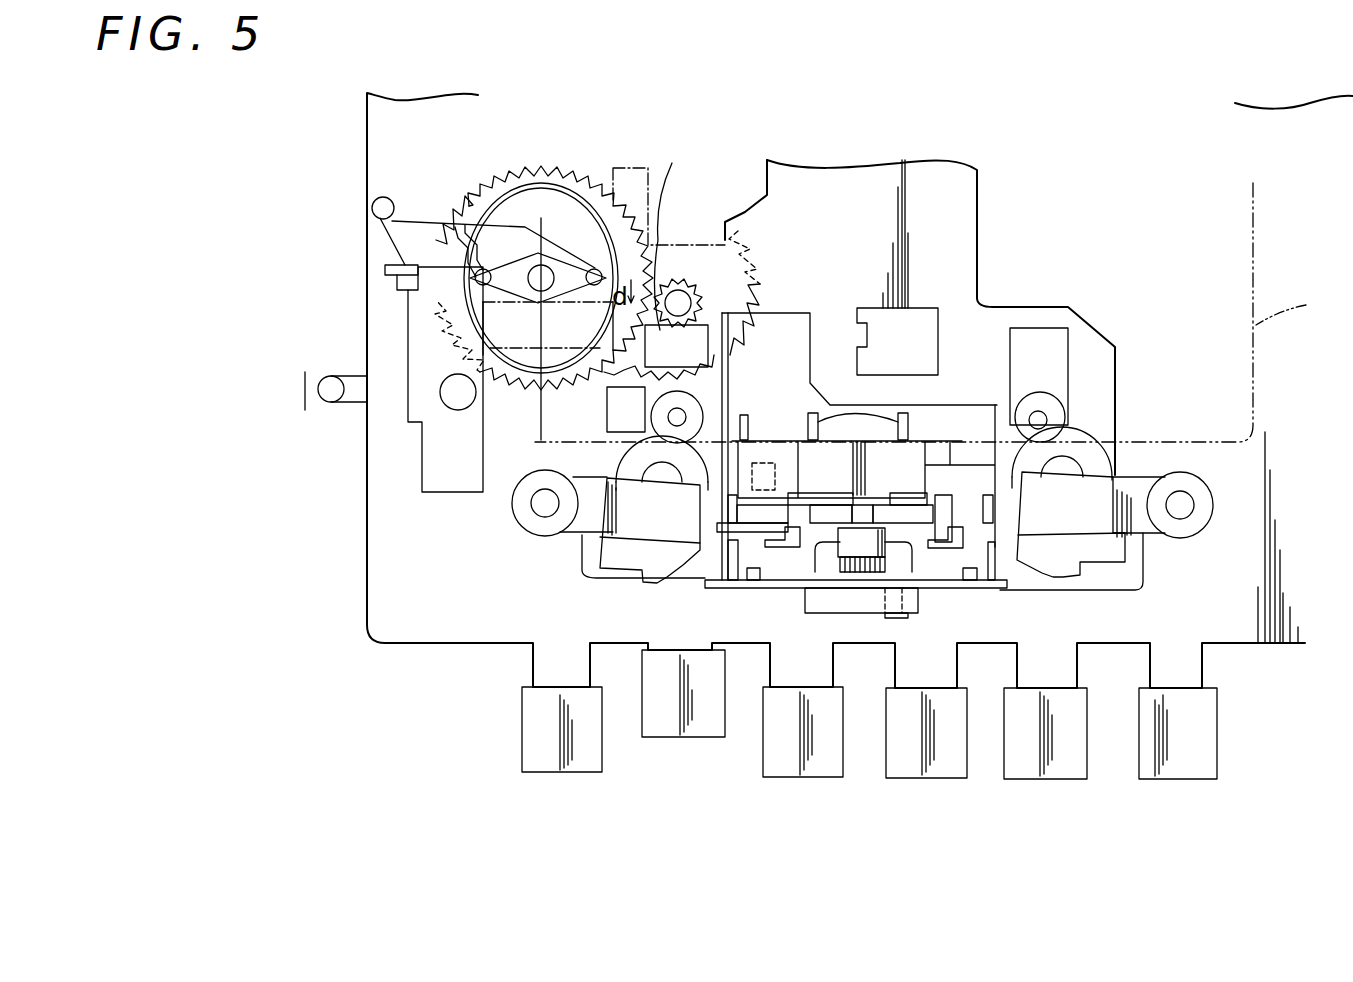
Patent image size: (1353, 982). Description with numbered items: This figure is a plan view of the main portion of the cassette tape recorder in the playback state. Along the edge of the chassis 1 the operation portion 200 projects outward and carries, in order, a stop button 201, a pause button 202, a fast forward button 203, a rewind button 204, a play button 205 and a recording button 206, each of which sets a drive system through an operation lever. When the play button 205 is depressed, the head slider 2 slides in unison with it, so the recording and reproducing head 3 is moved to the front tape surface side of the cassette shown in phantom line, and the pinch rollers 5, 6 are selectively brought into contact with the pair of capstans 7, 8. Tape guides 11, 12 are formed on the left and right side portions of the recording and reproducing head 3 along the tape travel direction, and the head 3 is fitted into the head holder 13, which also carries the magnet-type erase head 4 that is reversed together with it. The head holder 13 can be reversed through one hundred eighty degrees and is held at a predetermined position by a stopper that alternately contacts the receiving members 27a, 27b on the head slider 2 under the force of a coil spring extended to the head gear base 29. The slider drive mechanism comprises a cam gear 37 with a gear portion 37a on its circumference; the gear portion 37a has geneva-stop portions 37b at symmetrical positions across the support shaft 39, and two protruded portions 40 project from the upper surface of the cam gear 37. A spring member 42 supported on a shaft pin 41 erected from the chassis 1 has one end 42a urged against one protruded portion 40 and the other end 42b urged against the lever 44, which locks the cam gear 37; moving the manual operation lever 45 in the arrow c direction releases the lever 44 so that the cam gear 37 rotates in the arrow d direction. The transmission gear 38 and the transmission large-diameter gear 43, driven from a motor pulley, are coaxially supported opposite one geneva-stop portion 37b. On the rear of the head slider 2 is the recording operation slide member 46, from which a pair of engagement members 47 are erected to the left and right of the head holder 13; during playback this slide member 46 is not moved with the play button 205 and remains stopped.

The chassis 1 is at (471, 645).
The head slider 2 is at (580, 553).
The recording and reproducing head 3 is at (847, 423).
The erase head 4 is at (775, 470).
The pinch roller 5 is at (1100, 442).
The pinch roller 6 is at (617, 457).
The capstan 7 is at (1060, 402).
The capstan 8 is at (640, 416).
The tape guide 11 is at (808, 420).
The tape guide 12 is at (908, 422).
The head holder 13 is at (877, 443).
The receiving member 27a is at (777, 540).
The receiving member 27b is at (935, 540).
The head gear base 29 is at (1005, 590).
The cam gear 37 is at (544, 278).
The gear portion 37a is at (520, 170).
The geneva-stop portion 37b is at (443, 228).
The transmission gear 38 is at (690, 265).
The support shaft 39 is at (531, 307).
The protruded portion 40 is at (487, 267).
The shaft pin 41 is at (380, 197).
The spring member 42 is at (372, 208).
The one end of spring member 42a is at (553, 243).
The other end of spring member 42b is at (398, 237).
The transmission large-diameter gear 43 is at (458, 410).
The lever 44 is at (443, 493).
The manual operation lever 45 is at (334, 405).
The recording operation slide member 46 is at (972, 470).
The engagement member 47 is at (727, 508).
The operation portion 200 is at (985, 795).
The stop button 201 is at (1183, 780).
The pause button 202 is at (1055, 780).
The fast forward button 203 is at (930, 779).
The rewind button 204 is at (814, 778).
The play button 205 is at (694, 738).
The recording button 206 is at (584, 773).